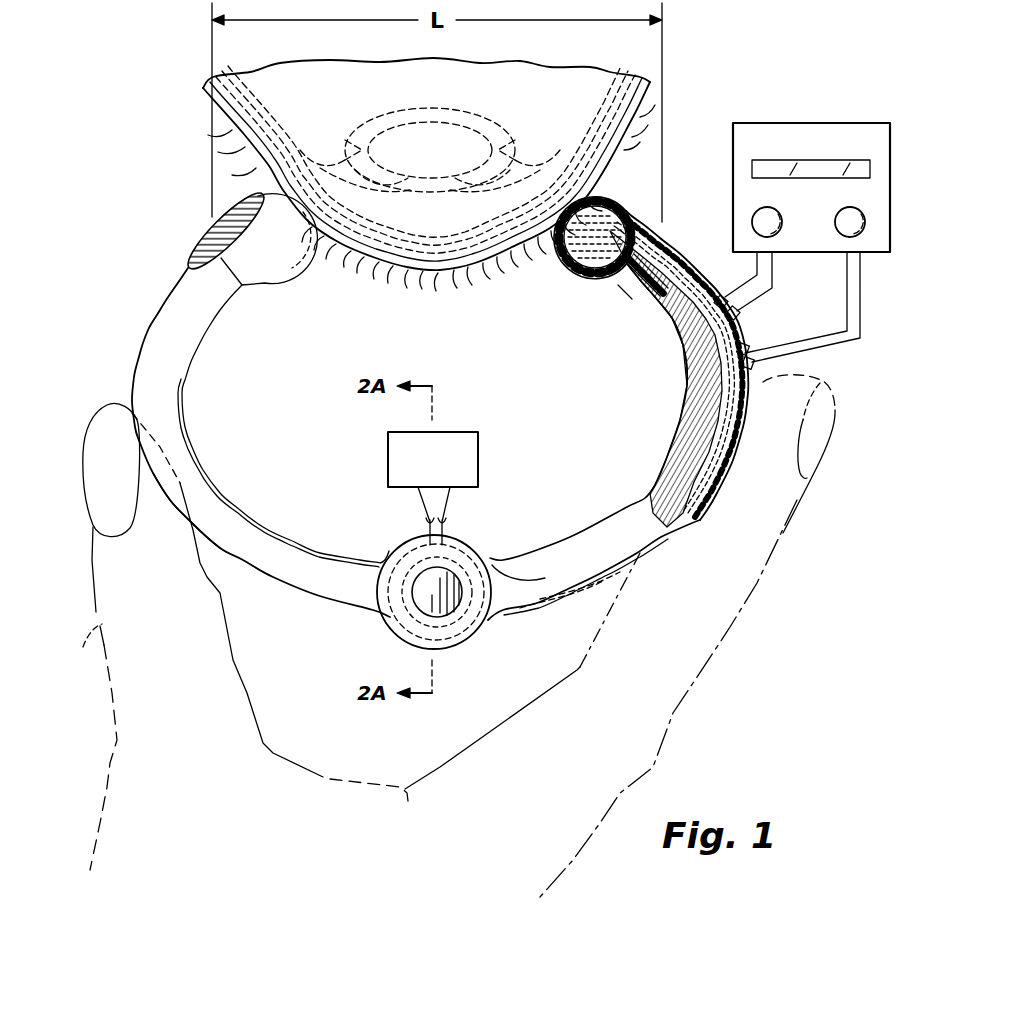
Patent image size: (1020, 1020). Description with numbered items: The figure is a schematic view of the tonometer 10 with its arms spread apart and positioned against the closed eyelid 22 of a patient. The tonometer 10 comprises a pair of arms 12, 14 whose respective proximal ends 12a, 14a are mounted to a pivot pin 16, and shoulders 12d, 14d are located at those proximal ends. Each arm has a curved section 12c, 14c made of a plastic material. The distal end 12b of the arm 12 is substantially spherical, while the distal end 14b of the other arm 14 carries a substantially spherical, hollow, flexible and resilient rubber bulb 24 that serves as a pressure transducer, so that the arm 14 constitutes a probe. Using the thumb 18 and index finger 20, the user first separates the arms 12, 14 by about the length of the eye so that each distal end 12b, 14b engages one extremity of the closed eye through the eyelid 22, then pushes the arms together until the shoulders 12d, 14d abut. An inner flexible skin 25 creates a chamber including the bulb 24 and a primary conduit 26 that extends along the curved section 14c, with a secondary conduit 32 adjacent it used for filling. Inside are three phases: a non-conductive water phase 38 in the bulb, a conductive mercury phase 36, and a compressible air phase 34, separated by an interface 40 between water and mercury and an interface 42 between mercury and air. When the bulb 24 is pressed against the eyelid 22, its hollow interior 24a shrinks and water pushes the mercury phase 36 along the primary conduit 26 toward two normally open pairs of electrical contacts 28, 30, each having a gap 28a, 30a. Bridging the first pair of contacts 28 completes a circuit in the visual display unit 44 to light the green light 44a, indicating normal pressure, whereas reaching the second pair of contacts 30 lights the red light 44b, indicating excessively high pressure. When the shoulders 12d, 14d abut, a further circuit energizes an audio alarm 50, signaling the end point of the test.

The tonometer 10 is at (146, 267).
The arm 12 is at (264, 417).
The proximal end 12a is at (358, 604).
The distal end 12b is at (216, 236).
The curved section 12c is at (193, 493).
The shoulder 12d is at (430, 528).
The arm 14 is at (652, 386).
The proximal end 14a is at (520, 596).
The distal end 14b is at (624, 200).
The curved section 14c is at (704, 482).
The shoulder 14d is at (442, 528).
The pivot pin 16 is at (453, 605).
The thumb 18 is at (350, 636).
The index finger 20 is at (754, 588).
The eyelid 22 is at (414, 276).
The rubber bulb 24 is at (600, 231).
The hollow interior 24a is at (613, 277).
The inner flexible skin 25 is at (600, 185).
The primary conduit 26 is at (740, 384).
The first pair of electrical contacts 28 is at (714, 298).
The gap 28a is at (737, 318).
The second pair of electrical contacts 30 is at (747, 345).
The gap 30a is at (652, 250).
The secondary conduit 32 is at (628, 292).
The gas phase 34 is at (740, 422).
The first liquid phase 36 is at (667, 307).
The second liquid phase 38 is at (578, 258).
The interface 40 is at (672, 262).
The interface 42 is at (676, 340).
The visual display unit 44 is at (817, 217).
The green light 44a is at (780, 230).
The red light 44b is at (863, 231).
The audio alarm 50 is at (457, 432).